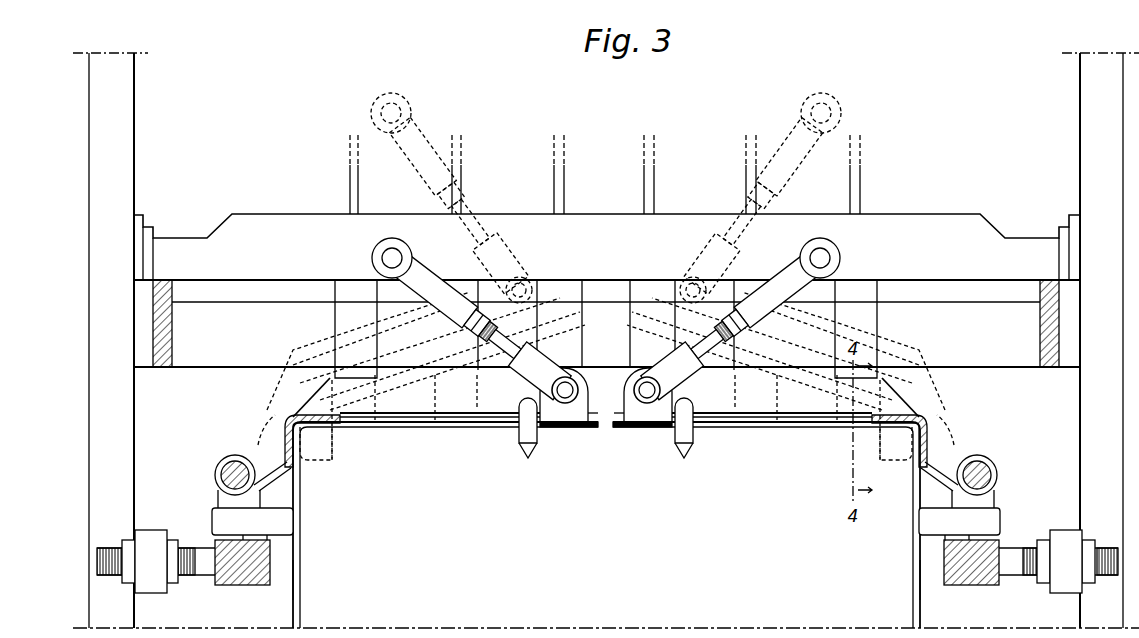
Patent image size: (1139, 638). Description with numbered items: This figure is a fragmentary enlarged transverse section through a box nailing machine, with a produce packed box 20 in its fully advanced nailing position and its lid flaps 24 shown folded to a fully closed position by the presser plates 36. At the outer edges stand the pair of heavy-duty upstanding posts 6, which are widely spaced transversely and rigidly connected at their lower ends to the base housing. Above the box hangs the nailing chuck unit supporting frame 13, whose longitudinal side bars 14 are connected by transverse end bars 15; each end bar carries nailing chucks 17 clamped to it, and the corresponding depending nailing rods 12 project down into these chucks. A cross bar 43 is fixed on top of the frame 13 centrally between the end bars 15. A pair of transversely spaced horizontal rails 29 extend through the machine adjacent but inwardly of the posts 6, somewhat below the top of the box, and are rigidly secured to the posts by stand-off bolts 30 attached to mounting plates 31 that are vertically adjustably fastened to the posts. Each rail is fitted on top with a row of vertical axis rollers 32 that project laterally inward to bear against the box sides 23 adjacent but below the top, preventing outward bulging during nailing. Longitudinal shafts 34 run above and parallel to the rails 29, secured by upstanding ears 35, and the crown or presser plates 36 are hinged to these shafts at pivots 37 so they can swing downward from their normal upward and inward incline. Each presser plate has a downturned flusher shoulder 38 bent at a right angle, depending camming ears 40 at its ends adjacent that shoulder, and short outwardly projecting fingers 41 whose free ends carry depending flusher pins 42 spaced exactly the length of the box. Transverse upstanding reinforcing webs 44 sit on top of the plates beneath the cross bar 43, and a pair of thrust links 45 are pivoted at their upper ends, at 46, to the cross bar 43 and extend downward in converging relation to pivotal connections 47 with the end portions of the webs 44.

The upstanding posts 6 is at (89, 440).
The nailing rods 12 is at (562, 178).
The nailing chuck unit supporting frame 13 is at (211, 377).
The longitudinal side bars 14 is at (172, 330).
The transverse end bars 15 is at (255, 357).
The nailing chucks 17 is at (345, 320).
The produce packed box 20 is at (290, 596).
The sides 23 is at (296, 572).
The lid flaps 24 is at (578, 430).
The horizontal rails 29 is at (245, 575).
The stand-off bolts 30 is at (197, 568).
The mounting plates 31 is at (146, 538).
The vertical axis rollers 32 is at (277, 522).
The longitudinal shafts 34 is at (224, 466).
The upstanding ears 35 is at (220, 498).
The presser plates 36 is at (450, 419).
The pivot 37 is at (272, 470).
The flusher shoulders 38 is at (287, 442).
The camming ears 40 is at (332, 455).
The fingers 41 is at (521, 404).
The flusher pins 42 is at (525, 452).
The cross bar 43 is at (932, 230).
The reinforcing webs 44 is at (420, 402).
The thrust links 45 is at (490, 358).
The upper pivot 46 is at (372, 255).
The pivotal connection 47 is at (644, 386).